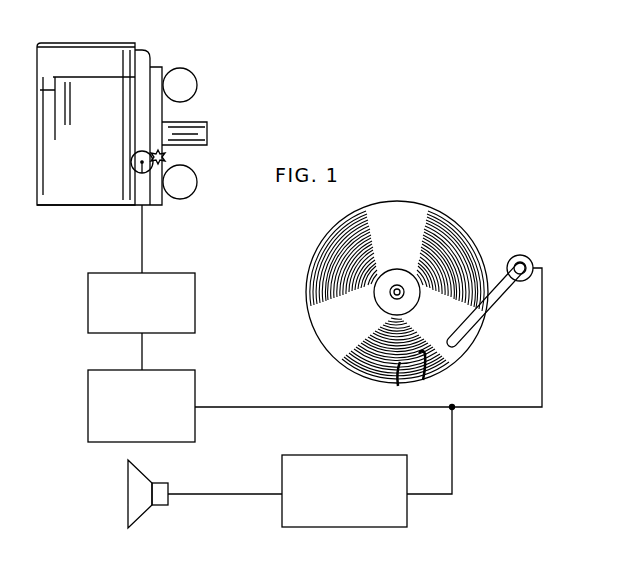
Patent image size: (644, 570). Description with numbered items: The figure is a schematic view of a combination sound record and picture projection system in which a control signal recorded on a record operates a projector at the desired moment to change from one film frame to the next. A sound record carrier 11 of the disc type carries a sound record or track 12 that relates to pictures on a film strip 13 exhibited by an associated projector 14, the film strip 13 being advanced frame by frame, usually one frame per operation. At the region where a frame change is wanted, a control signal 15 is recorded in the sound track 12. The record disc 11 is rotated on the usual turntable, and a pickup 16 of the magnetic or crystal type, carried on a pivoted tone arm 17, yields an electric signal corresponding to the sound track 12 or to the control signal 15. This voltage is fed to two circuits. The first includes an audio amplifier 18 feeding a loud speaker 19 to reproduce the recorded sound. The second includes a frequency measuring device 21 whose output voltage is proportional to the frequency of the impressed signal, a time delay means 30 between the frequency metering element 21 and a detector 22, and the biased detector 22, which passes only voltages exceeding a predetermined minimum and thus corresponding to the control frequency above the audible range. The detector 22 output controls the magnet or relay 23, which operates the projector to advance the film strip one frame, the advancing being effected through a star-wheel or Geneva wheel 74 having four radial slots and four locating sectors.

The sound record carrier 11 is at (308, 284).
The sound record or track 12 is at (398, 386).
The film strip 13 is at (193, 82).
The projector 14 is at (110, 43).
The control signal 15 is at (428, 380).
The pickup 16 is at (472, 333).
The tone arm 17 is at (522, 281).
The audio amplifier 18 is at (390, 455).
The loud speaker 19 is at (152, 484).
The frequency measuring device 21 is at (188, 406).
The detector 22 is at (188, 406).
The magnet or relay 23 is at (196, 278).
The time delay means 30 is at (196, 373).
The star-wheel or Geneva wheel 74 is at (167, 157).